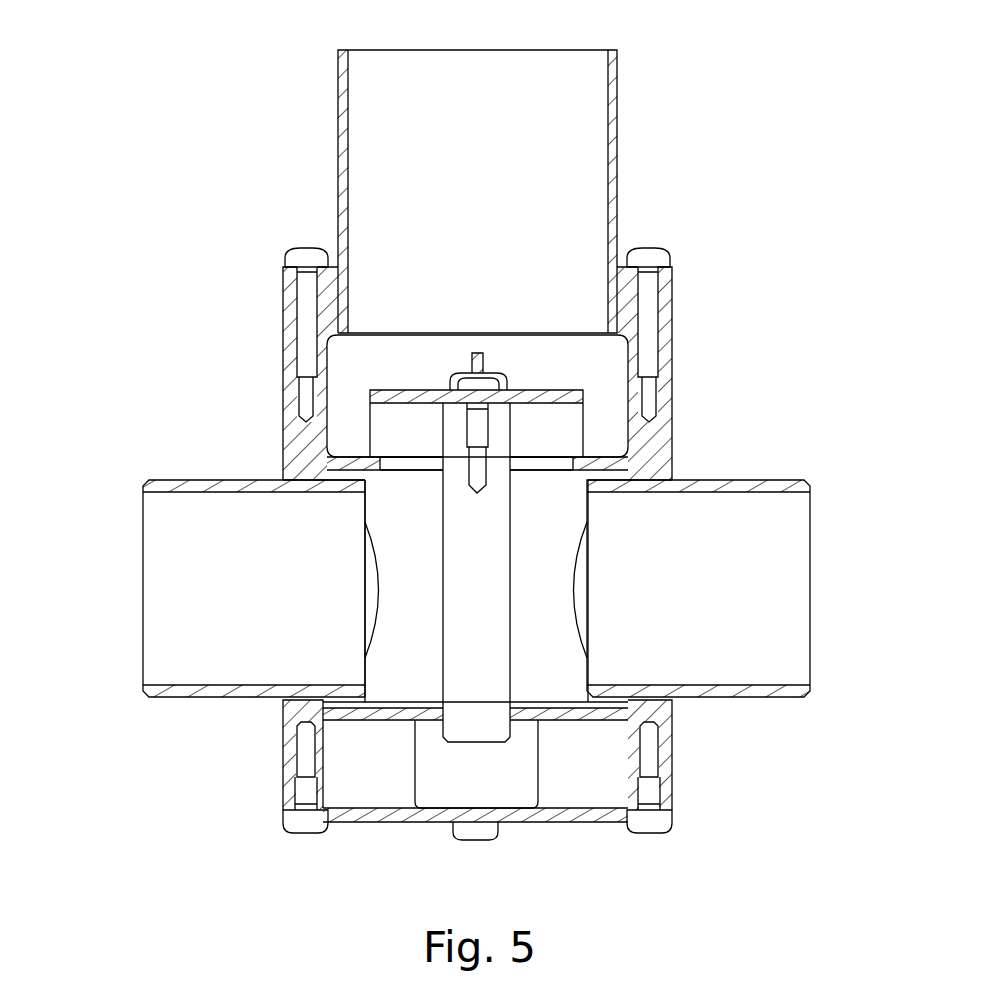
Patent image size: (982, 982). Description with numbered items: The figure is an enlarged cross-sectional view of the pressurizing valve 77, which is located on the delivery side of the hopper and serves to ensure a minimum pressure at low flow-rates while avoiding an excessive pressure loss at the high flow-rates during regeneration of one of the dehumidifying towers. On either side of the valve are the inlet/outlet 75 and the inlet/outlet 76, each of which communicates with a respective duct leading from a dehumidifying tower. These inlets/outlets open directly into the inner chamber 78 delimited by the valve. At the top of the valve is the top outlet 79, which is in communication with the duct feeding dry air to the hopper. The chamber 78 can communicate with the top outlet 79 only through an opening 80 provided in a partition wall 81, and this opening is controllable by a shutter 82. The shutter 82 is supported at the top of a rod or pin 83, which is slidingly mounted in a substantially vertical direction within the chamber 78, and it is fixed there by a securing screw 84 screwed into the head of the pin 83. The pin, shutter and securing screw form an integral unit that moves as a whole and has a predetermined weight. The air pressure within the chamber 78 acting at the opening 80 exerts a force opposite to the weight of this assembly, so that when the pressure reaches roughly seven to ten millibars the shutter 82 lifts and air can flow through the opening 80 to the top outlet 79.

The inlet/outlet 75 is at (180, 587).
The inlet/outlet 76 is at (782, 602).
The pressurizing valve 77 is at (675, 353).
The chamber 78 is at (432, 623).
The top outlet 79 is at (540, 72).
The opening 80 is at (410, 463).
The partition wall 81 is at (622, 465).
The shutter 82 is at (583, 398).
The pin 83 is at (492, 572).
The securing screw 84 is at (478, 418).